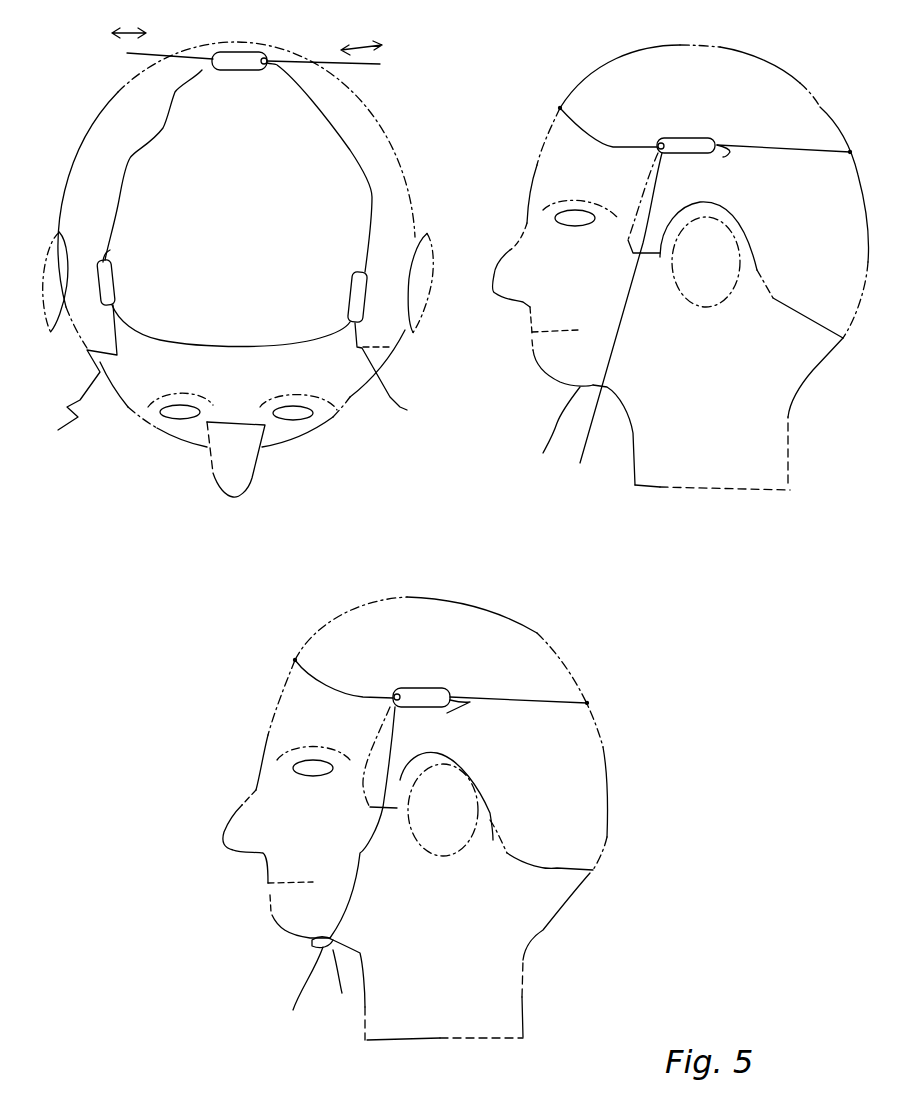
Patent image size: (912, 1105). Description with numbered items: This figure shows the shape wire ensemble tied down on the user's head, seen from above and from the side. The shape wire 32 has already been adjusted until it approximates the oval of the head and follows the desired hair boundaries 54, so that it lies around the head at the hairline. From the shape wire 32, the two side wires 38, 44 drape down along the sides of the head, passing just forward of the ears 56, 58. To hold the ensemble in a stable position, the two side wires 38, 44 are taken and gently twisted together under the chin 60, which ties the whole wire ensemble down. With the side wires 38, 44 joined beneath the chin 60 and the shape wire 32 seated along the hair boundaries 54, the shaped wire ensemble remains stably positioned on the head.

The shape wire 32 is at (130, 160).
The hair boundaries 54 is at (117, 183).
The ear 56 is at (425, 245).
The ear 58 is at (45, 236).
The side wire 38 is at (281, 991).
The side wire 44 is at (400, 397).
The chin 60 is at (550, 367).